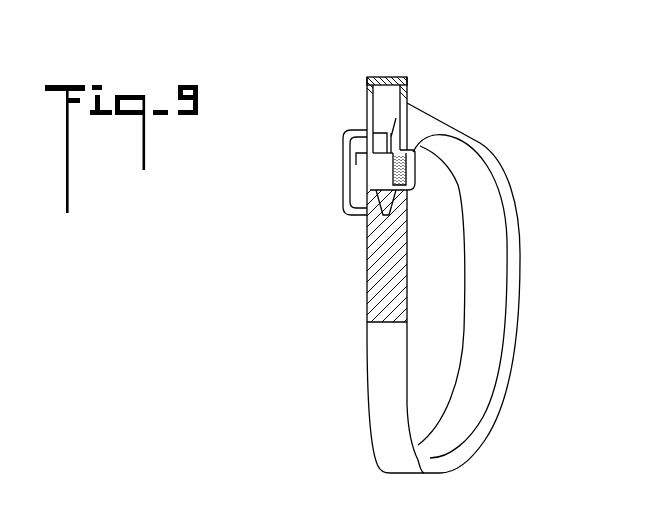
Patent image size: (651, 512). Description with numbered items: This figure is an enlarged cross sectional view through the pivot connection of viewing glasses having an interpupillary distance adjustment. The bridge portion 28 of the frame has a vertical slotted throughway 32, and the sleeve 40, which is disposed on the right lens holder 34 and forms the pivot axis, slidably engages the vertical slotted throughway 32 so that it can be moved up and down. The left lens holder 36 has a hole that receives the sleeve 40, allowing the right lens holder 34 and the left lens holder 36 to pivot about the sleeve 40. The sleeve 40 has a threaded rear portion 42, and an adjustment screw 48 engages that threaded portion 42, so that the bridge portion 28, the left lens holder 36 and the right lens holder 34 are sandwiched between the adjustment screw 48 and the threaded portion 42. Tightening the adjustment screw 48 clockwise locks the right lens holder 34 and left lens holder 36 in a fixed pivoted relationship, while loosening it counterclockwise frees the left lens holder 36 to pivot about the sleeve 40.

The bridge portion 28 is at (367, 85).
The vertical slotted throughway 32 is at (368, 122).
The right lens holder 34 is at (408, 105).
The left lens holder 36 is at (368, 222).
The sleeve 40 is at (388, 202).
The threaded rear portion 42 is at (413, 187).
The adjustment screw 48 is at (358, 173).